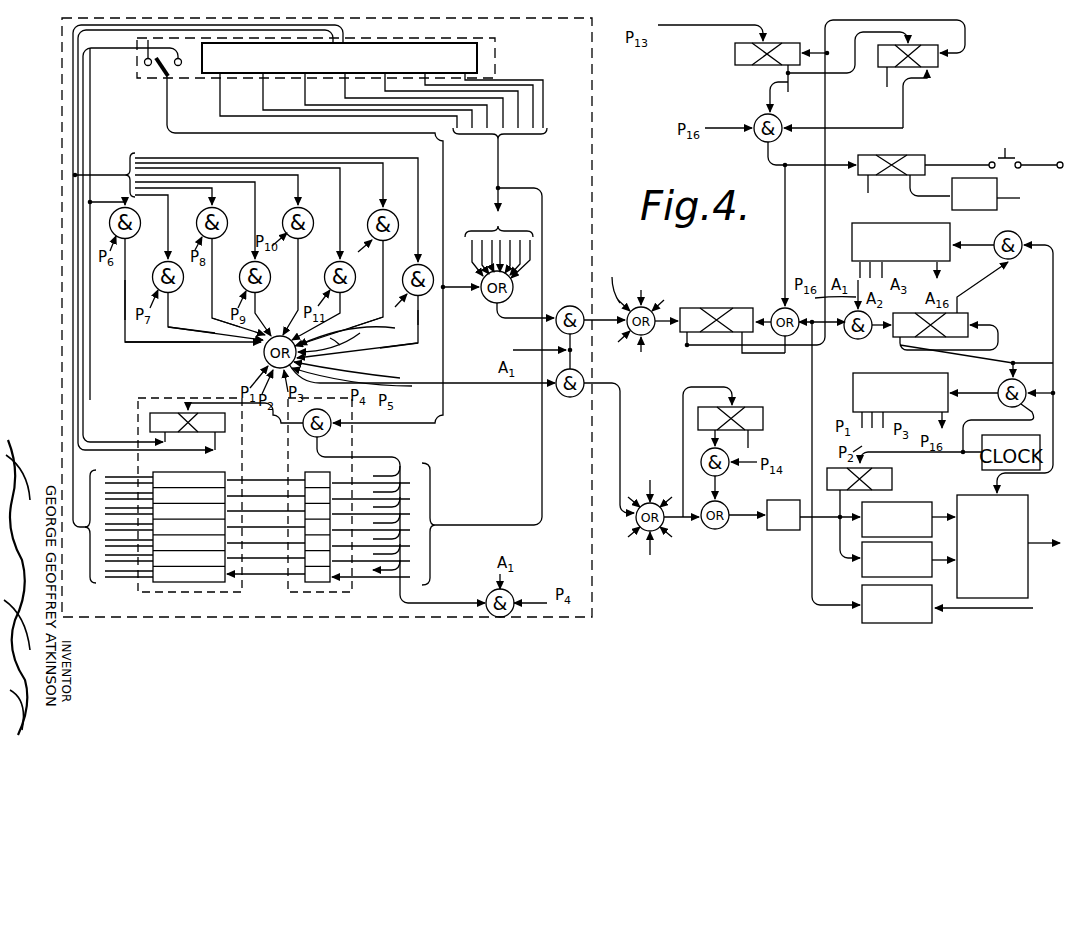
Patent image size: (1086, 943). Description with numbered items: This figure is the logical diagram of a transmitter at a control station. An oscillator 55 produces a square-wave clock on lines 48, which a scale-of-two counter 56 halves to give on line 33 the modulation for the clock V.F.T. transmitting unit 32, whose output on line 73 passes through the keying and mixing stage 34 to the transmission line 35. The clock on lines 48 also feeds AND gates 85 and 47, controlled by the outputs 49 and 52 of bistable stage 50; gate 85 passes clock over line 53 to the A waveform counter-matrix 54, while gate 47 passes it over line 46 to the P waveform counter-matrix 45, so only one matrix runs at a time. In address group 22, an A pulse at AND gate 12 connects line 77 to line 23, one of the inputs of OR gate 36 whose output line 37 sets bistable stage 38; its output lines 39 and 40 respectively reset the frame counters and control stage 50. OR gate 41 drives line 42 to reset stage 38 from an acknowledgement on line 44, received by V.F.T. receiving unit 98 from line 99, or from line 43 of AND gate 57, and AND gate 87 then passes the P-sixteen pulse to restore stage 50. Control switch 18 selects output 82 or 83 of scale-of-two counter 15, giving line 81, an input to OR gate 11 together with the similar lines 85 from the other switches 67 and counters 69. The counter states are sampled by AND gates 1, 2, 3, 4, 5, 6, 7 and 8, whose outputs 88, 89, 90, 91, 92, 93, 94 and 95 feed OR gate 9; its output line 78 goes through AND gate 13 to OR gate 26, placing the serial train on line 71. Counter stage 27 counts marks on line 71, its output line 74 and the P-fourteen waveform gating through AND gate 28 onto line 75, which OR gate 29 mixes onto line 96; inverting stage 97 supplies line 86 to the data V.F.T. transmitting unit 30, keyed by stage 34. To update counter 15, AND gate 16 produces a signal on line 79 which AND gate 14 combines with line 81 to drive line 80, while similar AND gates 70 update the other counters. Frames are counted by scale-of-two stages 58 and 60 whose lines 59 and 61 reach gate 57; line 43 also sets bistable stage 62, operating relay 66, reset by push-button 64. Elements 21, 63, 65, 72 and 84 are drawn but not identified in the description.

The AND gate 1 is at (175, 272).
The AND gate 2 is at (199, 267).
The AND gate 3 is at (200, 261).
The AND gate 4 is at (203, 259).
The AND gate 5 is at (224, 255).
The AND gate 6 is at (245, 254).
The AND gate 7 is at (267, 254).
The AND gate 8 is at (428, 265).
The OR gate 9 is at (297, 372).
The OR gate 11 is at (483, 300).
The AND gate 12 is at (557, 312).
The AND gate 13 is at (560, 390).
The AND gate 14 is at (313, 440).
The scale-of-two counter 15 is at (225, 425).
The AND gate 16 is at (138, 595).
The control switch 18 is at (167, 82).
The register 21 is at (350, 586).
The address group 22 is at (399, 108).
The line 23 is at (614, 281).
The OR gate 26 is at (647, 525).
The scale-of-two counter stage 27 is at (764, 420).
The AND gate 28 is at (709, 481).
The OR gate 29 is at (715, 529).
The data V.F.T. transmitting unit 30 is at (862, 528).
The clock V.F.T. transmitting unit 32 is at (860, 565).
The line 33 is at (836, 512).
The keying and mixing stage 34 is at (1030, 520).
The transmission line 35 is at (1047, 548).
The OR gate 36 is at (641, 328).
The output line 37 is at (657, 310).
The bistable stage 38 is at (718, 308).
The output line 39 is at (808, 38).
The output line 40 is at (763, 352).
The OR gate 41 is at (787, 354).
The line 42 is at (771, 313).
The output line 43 is at (803, 147).
The line 44 is at (811, 388).
The P waveform counter-matrix 45 is at (853, 380).
The line 46 is at (967, 400).
The AND gate 47 is at (1002, 403).
The lines 48 is at (1052, 290).
The output 49 is at (1017, 362).
The bistable stage 50 is at (945, 335).
The output 52 is at (990, 291).
The line 53 is at (966, 243).
The A waveform counter-matrix 54 is at (886, 227).
The oscillator 55 is at (1016, 407).
The scale-of-two counter 56 is at (892, 480).
The AND gate 57 is at (759, 118).
The scale-of-two stage 58 is at (733, 52).
The line 59 is at (790, 88).
The scale-of-two stage 60 is at (927, 48).
The line 61 is at (918, 99).
The bistable stage 62 is at (908, 155).
The line 63 is at (952, 160).
The manual push-button 64 is at (1010, 150).
The output terminal 65 is at (1059, 158).
The relay 66 is at (998, 190).
The control switches 67 is at (477, 62).
The counters 69 is at (200, 582).
The AND gates 70 is at (313, 584).
The line 71 is at (690, 526).
The line 72 is at (950, 515).
The line 73 is at (950, 558).
The output line 74 is at (721, 453).
The output line 75 is at (722, 487).
The line 77 is at (534, 322).
The output line 78 is at (470, 383).
The line 79 is at (452, 606).
The line 80 is at (245, 434).
The line 81 is at (160, 103).
The line 82 is at (88, 92).
The line 83 is at (88, 72).
The line 84 is at (343, 31).
The AND gate 85 is at (498, 157).
The output line 86 is at (792, 536).
The AND gate 87 is at (853, 314).
The output line 88 is at (123, 302).
The output line 89 is at (178, 343).
The output line 90 is at (212, 332).
The output line 91 is at (242, 330).
The output line 92 is at (329, 357).
The output line 93 is at (355, 328).
The output line 94 is at (392, 345).
The output line 95 is at (418, 315).
The line 96 is at (740, 531).
The inverting stage 97 is at (781, 533).
The V.F.T. receiving unit 98 is at (860, 600).
The line 99 is at (947, 602).